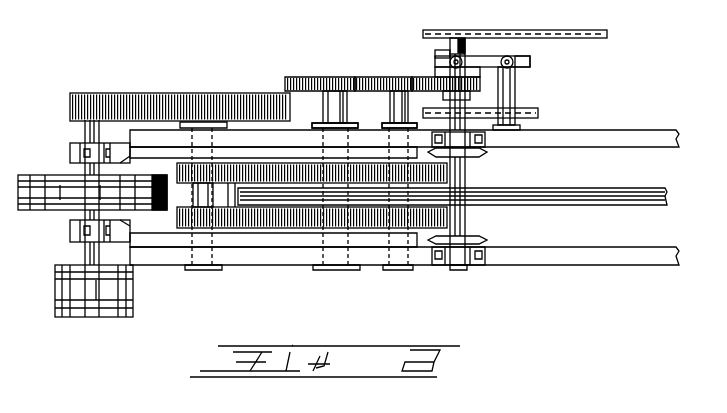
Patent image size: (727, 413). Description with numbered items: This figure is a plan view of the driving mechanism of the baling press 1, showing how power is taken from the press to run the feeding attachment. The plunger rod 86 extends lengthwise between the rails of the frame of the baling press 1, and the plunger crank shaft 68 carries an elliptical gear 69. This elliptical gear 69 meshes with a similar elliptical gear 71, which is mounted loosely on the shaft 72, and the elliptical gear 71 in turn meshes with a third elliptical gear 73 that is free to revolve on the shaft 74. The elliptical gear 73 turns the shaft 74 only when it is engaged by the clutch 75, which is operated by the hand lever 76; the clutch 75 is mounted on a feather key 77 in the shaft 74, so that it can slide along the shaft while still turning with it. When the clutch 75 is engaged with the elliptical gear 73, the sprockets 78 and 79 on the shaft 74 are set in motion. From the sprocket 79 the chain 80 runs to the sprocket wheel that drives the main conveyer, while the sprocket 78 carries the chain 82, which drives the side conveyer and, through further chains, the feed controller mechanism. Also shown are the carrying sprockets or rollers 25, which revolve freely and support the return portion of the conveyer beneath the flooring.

The baling press 1 is at (553, 138).
The carrying sprockets or rollers 25 is at (487, 153).
The plunger crank shaft 68 is at (326, 114).
The elliptical gear 69 is at (341, 78).
The elliptical gear 71 is at (378, 78).
The shaft 72 is at (393, 118).
The elliptical gear 73 is at (434, 78).
The shaft 74 is at (466, 218).
The clutch 75 is at (443, 52).
The hand lever 76 is at (530, 62).
The feather key 77 is at (468, 58).
The sprocket 78 is at (456, 30).
The sprocket 79 is at (478, 112).
The chain 80 is at (516, 98).
The chain 82 is at (515, 23).
The plunger rod 86 is at (591, 187).